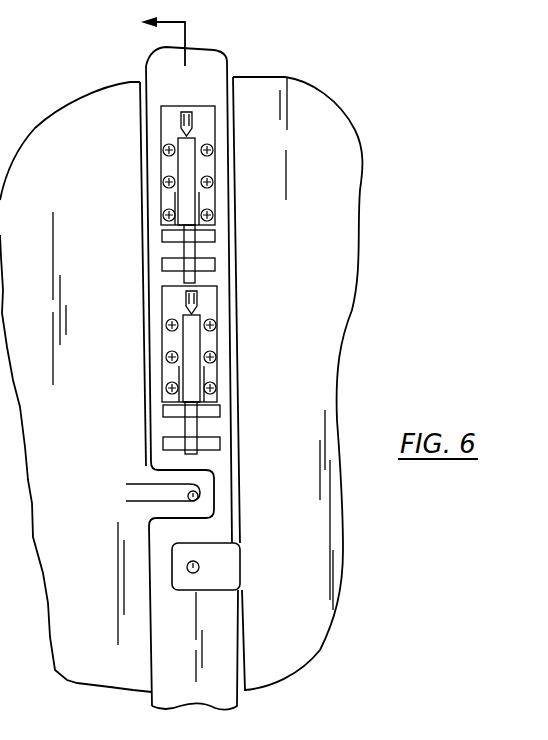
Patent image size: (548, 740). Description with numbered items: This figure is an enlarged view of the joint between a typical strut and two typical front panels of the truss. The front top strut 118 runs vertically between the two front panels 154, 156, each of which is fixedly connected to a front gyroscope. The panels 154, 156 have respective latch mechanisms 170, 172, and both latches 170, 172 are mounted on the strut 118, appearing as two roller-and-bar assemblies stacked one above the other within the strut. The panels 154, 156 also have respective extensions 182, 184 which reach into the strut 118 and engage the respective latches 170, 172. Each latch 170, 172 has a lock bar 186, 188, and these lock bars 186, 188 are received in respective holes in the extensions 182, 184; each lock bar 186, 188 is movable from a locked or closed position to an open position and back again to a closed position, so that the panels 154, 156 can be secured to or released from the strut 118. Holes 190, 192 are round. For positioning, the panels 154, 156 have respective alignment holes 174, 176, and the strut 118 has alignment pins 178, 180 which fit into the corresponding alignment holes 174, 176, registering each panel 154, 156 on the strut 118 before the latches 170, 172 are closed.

The front top strut 118 is at (148, 60).
The front panel 154 is at (82, 563).
The front panel 156 is at (350, 180).
The latch mechanism 170 is at (170, 196).
The latch mechanism 172 is at (212, 370).
The alignment hole 174 is at (160, 485).
The alignment hole 176 is at (202, 564).
The alignment pin 178 is at (188, 498).
The alignment pin 180 is at (205, 570).
The extension 182 is at (160, 252).
The extension 184 is at (222, 424).
The lock bar 186 is at (188, 162).
The lock bar 188 is at (190, 333).
The hole 190 is at (195, 247).
The hole 192 is at (150, 418).